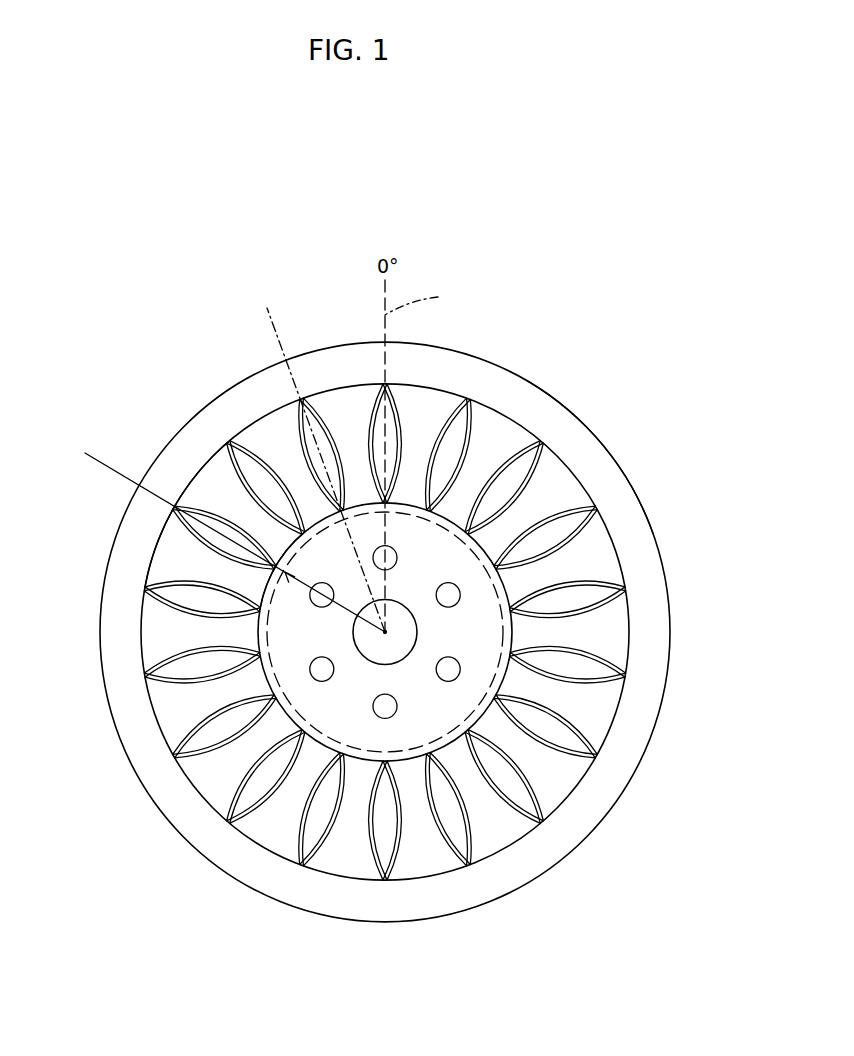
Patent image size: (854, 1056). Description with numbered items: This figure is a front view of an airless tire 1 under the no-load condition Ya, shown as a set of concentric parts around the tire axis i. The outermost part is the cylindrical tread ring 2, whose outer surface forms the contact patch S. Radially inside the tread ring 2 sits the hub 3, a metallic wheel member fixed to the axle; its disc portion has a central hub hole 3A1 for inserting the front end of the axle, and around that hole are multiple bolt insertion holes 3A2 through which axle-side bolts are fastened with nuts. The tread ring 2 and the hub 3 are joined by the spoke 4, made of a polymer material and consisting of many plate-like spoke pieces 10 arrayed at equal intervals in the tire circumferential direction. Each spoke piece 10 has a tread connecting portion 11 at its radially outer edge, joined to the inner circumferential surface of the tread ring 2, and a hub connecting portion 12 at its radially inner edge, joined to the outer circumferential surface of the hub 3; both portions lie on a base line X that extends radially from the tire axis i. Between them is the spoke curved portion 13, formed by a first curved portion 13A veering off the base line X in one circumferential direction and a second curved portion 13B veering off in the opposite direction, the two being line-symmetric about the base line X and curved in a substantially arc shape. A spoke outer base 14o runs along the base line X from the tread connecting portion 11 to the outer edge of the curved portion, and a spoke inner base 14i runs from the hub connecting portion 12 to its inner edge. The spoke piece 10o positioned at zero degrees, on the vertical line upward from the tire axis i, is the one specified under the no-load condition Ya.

The airless tire 1 is at (582, 388).
The tread ring 2 is at (622, 465).
The hub 3 is at (508, 681).
The hub hole 3A1 is at (405, 661).
The bolt insertion holes 3A2 is at (458, 678).
The spoke 4 is at (602, 578).
The contact patch S is at (645, 508).
The tire axis i is at (403, 629).
The spoke piece 10 is at (267, 437).
The spoke piece positioned at 0° 10o is at (405, 407).
The tread connecting portion 11 is at (172, 497).
The hub connecting portion 12 is at (285, 572).
The spoke curved portion 13 is at (205, 547).
The first curved portion 13A is at (297, 440).
The second curved portion 13B is at (335, 450).
The spoke outer base 14o is at (178, 505).
The spoke inner base 14i is at (270, 567).
The no-load condition Ya is at (633, 405).
The base line X is at (280, 330).